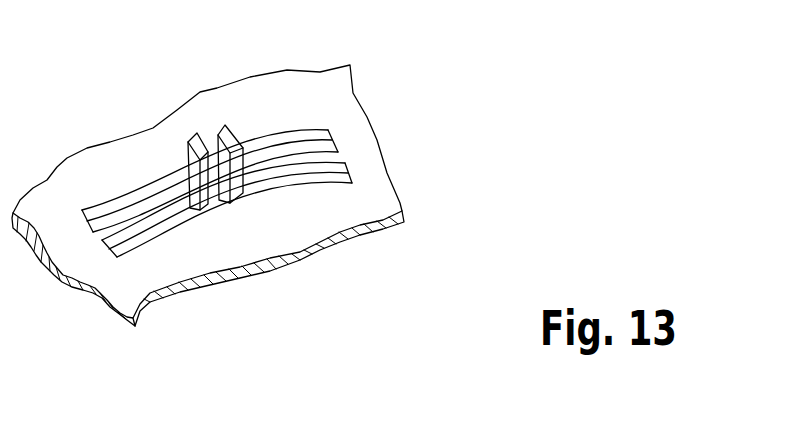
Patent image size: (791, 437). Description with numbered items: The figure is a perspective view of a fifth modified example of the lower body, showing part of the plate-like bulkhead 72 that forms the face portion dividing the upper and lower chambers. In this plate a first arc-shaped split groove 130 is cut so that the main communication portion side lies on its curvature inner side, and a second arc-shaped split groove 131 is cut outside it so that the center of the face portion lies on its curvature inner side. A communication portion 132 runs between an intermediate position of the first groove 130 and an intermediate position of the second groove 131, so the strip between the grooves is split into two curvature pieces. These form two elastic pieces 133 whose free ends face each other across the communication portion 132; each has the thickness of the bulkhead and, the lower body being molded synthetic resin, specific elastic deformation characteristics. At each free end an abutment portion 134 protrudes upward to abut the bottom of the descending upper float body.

The substrate plate 72 is at (377, 203).
The first arc-shaped split groove 130 is at (290, 178).
The second arc-shaped split groove 131 is at (283, 142).
The communication portion 132 is at (215, 185).
The elastic piece 133 is at (153, 204).
The abutment portion 134 is at (190, 138).